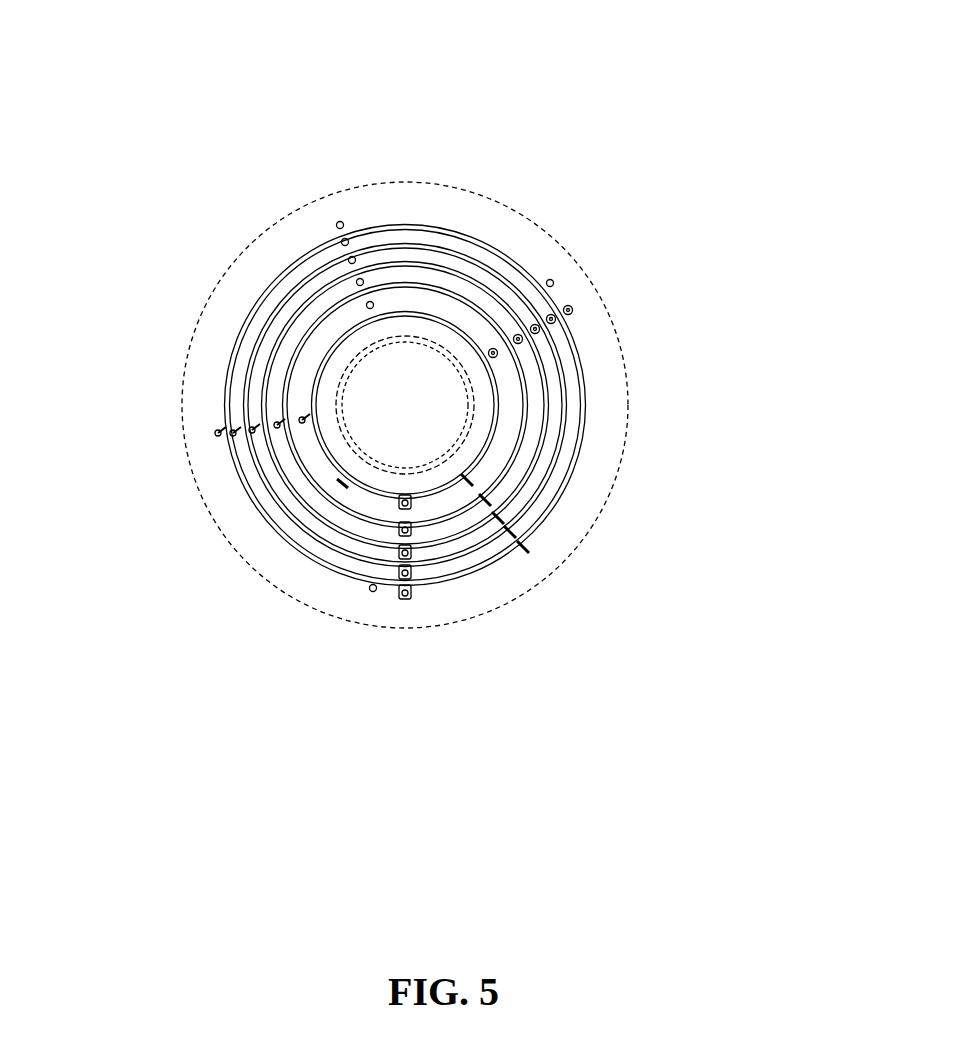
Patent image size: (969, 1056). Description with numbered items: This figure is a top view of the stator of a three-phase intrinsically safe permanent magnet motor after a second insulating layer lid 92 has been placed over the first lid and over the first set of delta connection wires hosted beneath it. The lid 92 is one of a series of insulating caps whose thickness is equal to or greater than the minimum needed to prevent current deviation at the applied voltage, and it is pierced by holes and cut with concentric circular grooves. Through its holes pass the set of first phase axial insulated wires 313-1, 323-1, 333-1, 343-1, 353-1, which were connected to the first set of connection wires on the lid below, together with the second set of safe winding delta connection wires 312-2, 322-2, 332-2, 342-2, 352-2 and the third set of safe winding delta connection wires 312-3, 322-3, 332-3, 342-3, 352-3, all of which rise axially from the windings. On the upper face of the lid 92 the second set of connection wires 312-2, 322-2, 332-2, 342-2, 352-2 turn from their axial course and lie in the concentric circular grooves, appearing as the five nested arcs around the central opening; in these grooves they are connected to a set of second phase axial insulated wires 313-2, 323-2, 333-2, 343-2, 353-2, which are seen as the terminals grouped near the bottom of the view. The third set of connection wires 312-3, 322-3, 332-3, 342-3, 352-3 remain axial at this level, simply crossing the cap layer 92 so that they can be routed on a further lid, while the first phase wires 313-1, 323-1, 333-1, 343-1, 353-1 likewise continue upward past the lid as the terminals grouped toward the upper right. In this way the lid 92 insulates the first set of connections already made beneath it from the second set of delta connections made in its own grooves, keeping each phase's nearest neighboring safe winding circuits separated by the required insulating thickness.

The second insulating layer lid 92 is at (605, 428).
The second set safe winding Δ connection wire 312-2 is at (165, 692).
The second set safe winding Δ connection wire 322-2 is at (165, 655).
The second set safe winding Δ connection wire 332-2 is at (165, 620).
The second set safe winding Δ connection wire 342-2 is at (165, 585).
The second set safe winding Δ connection wire 352-2 is at (165, 548).
The third set safe winding Δ connection wire 312-3 is at (340, 225).
The third set safe winding Δ connection wire 322-3 is at (345, 242).
The third set safe winding Δ connection wire 332-3 is at (352, 260).
The third set safe winding Δ connection wire 342-3 is at (360, 282).
The third set safe winding Δ connection wire 352-3 is at (370, 305).
The first phase axial insulated wire 313-1 is at (572, 309).
The first phase axial insulated wire 323-1 is at (555, 319).
The first phase axial insulated wire 333-1 is at (539, 329).
The first phase axial insulated wire 343-1 is at (522, 339).
The first phase axial insulated wire 353-1 is at (497, 353).
The second phase axial insulated wire 313-2 is at (477, 711).
The second phase axial insulated wire 323-2 is at (477, 682).
The second phase axial insulated wire 333-2 is at (477, 654).
The second phase axial insulated wire 343-2 is at (477, 625).
The second phase axial insulated wire 353-2 is at (477, 593).